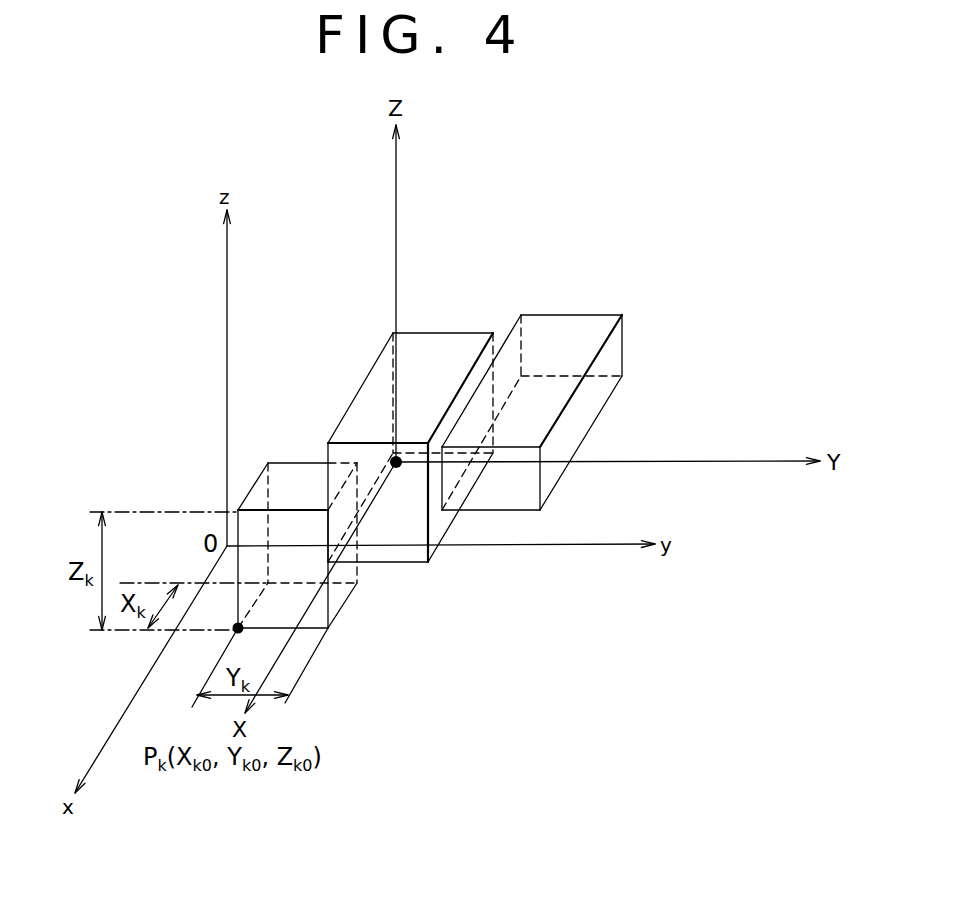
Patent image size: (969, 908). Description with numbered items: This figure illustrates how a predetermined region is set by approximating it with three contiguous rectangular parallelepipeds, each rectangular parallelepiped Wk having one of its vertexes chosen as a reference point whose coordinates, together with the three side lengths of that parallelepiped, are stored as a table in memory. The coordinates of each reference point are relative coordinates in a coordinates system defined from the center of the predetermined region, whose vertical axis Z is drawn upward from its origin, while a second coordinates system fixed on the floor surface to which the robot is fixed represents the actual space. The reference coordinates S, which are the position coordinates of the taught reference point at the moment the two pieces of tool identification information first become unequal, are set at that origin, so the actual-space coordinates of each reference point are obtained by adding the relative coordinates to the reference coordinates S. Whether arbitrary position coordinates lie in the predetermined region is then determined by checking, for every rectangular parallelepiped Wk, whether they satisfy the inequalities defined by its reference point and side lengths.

The rectangular parallelepiped Wk is at (252, 481).
The reference coordinates S is at (396, 462).
The Z axis Z is at (575, 293).